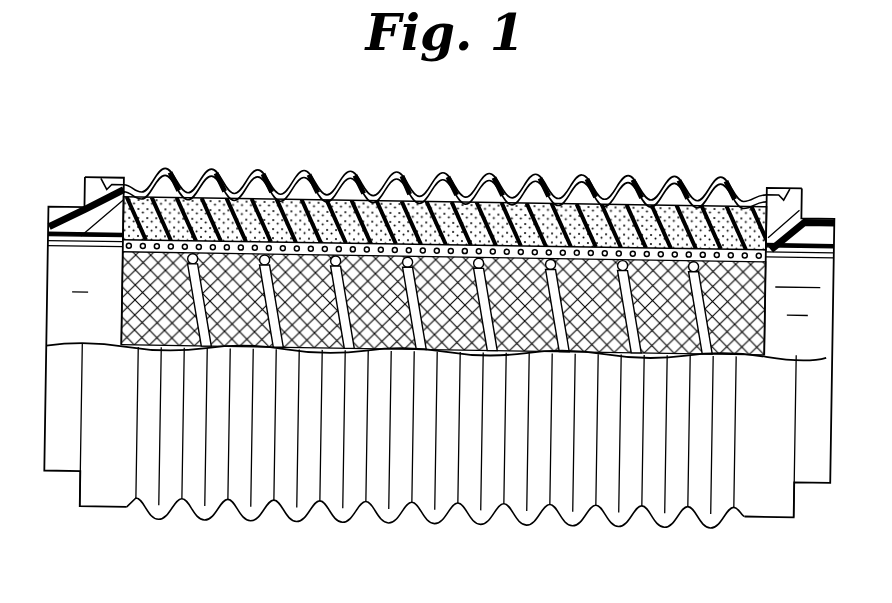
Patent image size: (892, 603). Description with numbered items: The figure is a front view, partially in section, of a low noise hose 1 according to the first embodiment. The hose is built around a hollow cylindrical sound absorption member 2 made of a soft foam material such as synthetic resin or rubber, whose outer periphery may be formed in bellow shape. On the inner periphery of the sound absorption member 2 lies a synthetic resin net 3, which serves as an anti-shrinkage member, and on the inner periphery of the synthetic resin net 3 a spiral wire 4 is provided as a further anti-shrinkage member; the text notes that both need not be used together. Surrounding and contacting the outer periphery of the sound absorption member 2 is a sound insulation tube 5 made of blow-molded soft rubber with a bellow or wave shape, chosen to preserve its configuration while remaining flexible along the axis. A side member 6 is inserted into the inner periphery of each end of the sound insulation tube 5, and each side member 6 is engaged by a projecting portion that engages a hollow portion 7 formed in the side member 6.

The low noise hose 1 is at (207, 160).
The sound absorption member 2 is at (327, 205).
The synthetic resin net 3 is at (120, 263).
The spiral wire 4 is at (200, 313).
The sound insulation tube 5 is at (578, 176).
The side member 6 is at (54, 207).
The hollow portion 7 is at (106, 180).